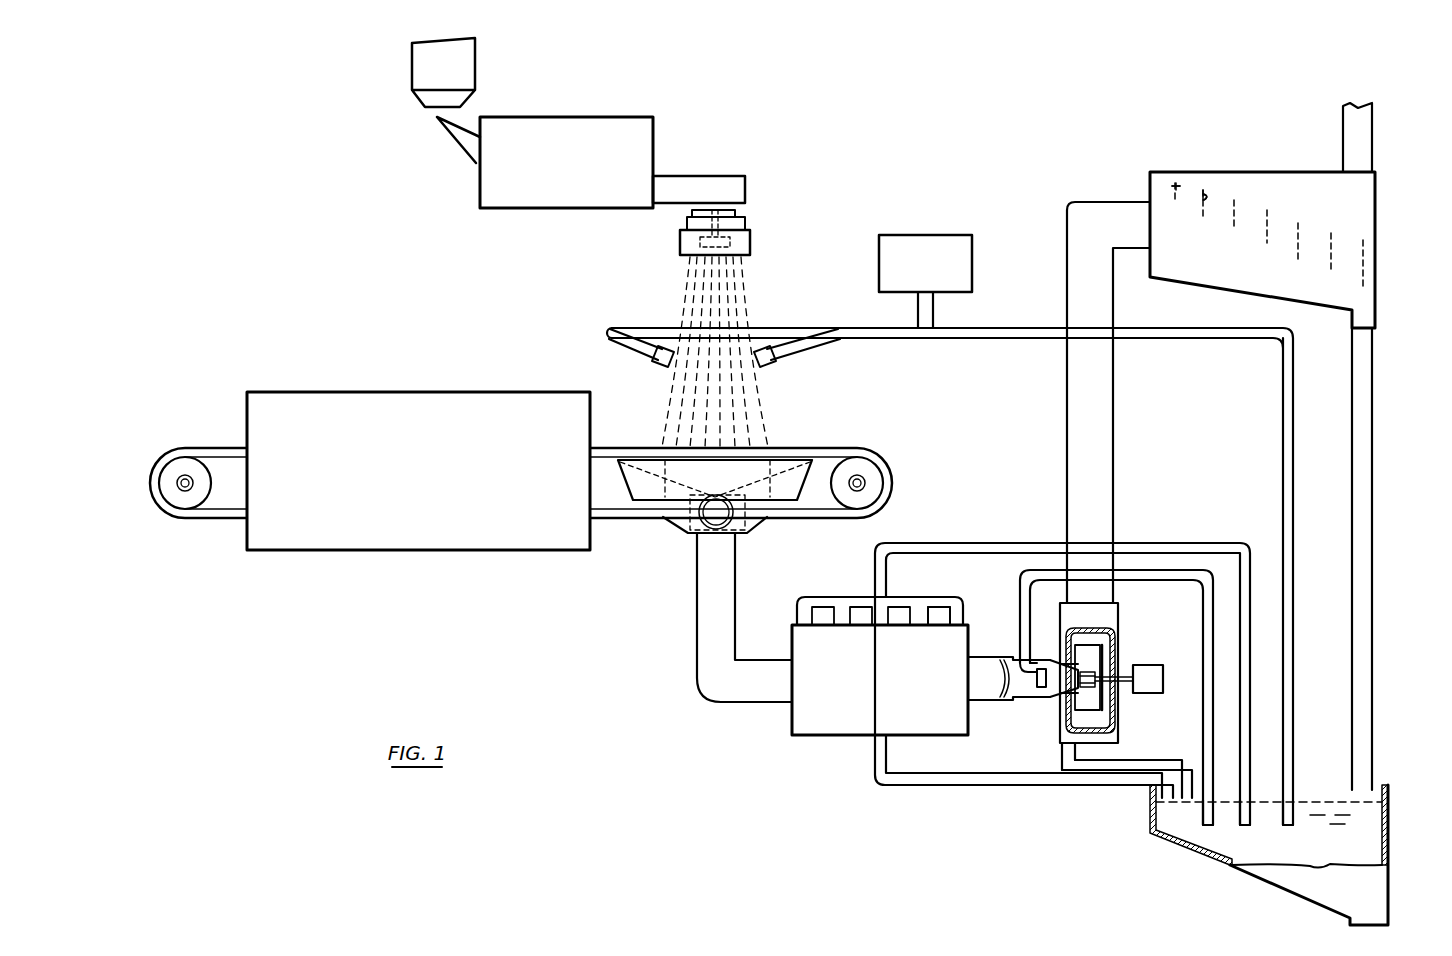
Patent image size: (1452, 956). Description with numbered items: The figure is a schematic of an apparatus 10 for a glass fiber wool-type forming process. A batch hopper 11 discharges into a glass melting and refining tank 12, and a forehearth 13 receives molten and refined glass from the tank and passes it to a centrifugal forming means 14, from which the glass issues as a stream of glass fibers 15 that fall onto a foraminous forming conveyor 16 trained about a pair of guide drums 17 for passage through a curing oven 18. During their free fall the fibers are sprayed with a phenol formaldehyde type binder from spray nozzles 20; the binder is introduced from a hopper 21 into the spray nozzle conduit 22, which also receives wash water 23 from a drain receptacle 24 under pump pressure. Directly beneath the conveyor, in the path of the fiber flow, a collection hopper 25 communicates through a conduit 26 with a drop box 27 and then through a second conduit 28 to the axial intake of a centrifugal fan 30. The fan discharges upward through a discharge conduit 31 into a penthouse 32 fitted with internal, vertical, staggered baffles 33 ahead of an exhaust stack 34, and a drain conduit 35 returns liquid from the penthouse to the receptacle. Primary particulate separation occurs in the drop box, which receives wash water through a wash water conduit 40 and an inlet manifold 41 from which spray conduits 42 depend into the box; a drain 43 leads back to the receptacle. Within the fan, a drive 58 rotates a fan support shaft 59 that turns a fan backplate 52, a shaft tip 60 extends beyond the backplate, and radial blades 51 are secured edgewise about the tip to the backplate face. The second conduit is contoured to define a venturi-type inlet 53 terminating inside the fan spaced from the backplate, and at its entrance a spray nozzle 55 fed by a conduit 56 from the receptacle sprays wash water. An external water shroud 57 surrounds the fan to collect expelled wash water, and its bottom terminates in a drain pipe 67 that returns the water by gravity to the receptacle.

The apparatus 10 is at (854, 157).
The batch hopper 11 is at (418, 68).
The glass melting and refining tank 12 is at (623, 126).
The forehearth 13 is at (724, 184).
The centrifugal forming means 14 is at (746, 222).
The glass fibers 15 is at (752, 280).
The foraminous forming conveyor 16 is at (829, 448).
The guide drums 17 is at (187, 505).
The curing oven 18 is at (418, 405).
The spray nozzles 20 is at (663, 363).
The hopper 21 is at (911, 274).
The spray nozzle conduit 22 is at (893, 338).
The wash water 23 is at (1372, 835).
The drain receptacle 24 is at (1372, 893).
The collection hopper 25 is at (665, 545).
The conduit 26 is at (697, 657).
The drop box 27 is at (869, 684).
The second conduit 28 is at (982, 665).
The centrifugal fan 30 is at (1125, 630).
The discharge conduit 31 is at (1115, 438).
The penthouse 32 is at (1258, 178).
The baffles 33 is at (1197, 180).
The exhaust stack 34 is at (1350, 120).
The drain conduit 35 is at (1375, 438).
The wash water conduit 40 is at (968, 543).
The inlet manifold 41 is at (820, 600).
The spray conduits 42 is at (955, 603).
The drain 43 is at (888, 786).
The radial blades 51 is at (1080, 655).
The fan backplate 52 is at (1104, 653).
The venturi-type inlet 53 is at (1068, 700).
The spray nozzle 55 is at (1042, 688).
The conduit 56 is at (1165, 570).
The water shroud 57 is at (1048, 746).
The drive 58 is at (1163, 677).
The fan support shaft 59 is at (1125, 686).
The shaft tip 60 is at (1098, 690).
The drain pipe 67 is at (1160, 766).